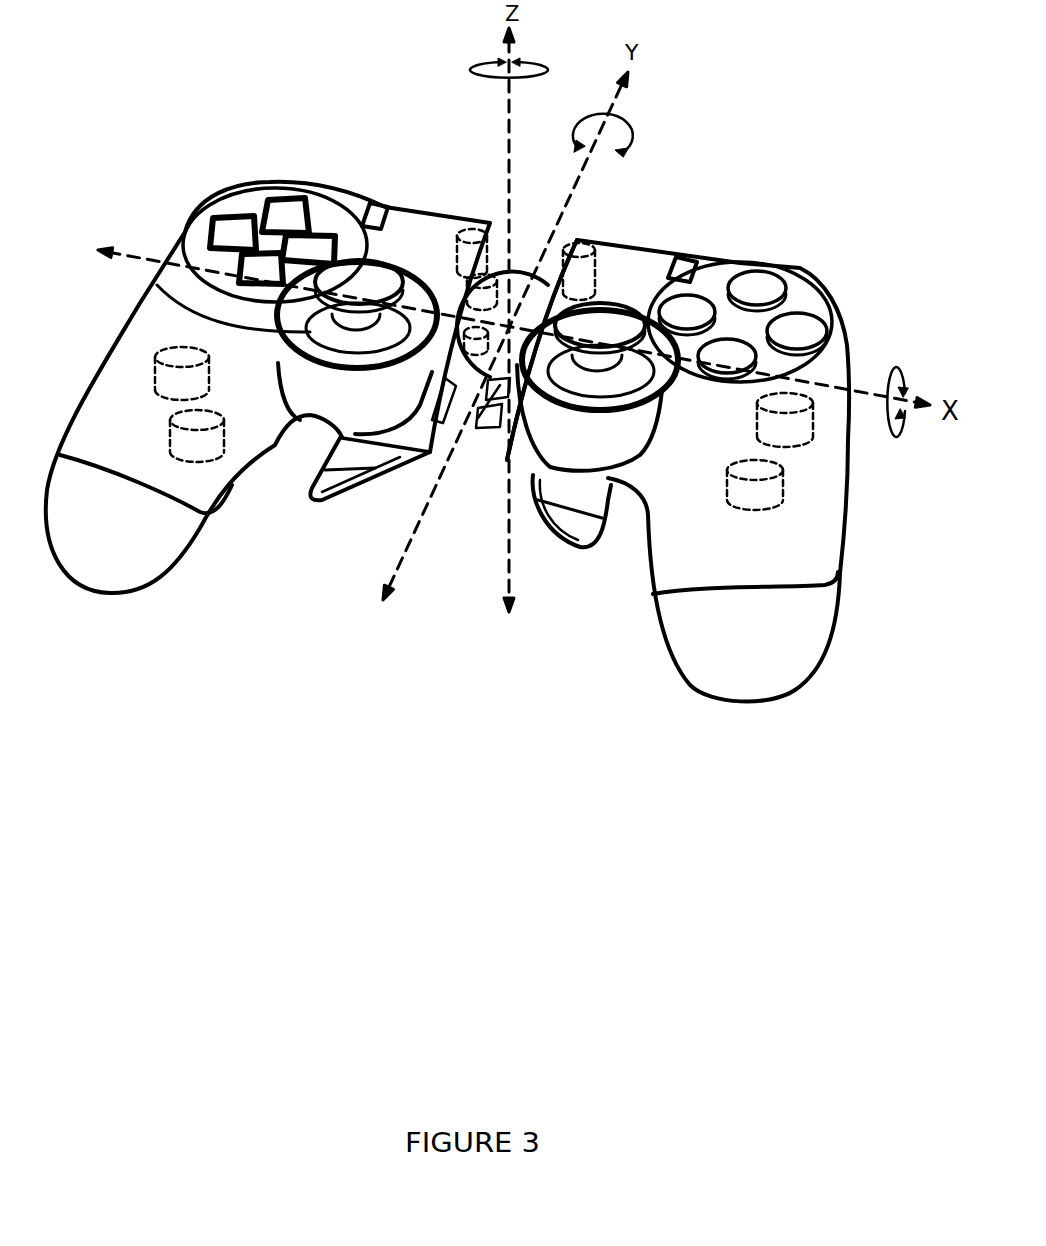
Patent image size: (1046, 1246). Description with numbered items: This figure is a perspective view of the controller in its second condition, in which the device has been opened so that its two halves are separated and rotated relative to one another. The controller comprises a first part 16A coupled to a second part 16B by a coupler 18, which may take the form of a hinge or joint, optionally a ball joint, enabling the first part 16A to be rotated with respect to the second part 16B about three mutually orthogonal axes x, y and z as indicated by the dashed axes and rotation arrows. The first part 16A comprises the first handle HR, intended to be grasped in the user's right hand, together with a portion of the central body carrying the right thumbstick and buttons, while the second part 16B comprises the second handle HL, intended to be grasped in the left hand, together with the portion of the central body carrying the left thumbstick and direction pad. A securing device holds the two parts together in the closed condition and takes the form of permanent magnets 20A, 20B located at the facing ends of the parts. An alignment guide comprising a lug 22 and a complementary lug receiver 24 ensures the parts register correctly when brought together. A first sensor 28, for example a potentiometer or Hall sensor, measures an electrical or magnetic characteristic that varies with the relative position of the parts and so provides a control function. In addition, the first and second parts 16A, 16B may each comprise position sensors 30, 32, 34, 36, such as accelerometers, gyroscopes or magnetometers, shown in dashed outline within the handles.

The first part 16A is at (773, 659).
The second part 16B is at (137, 537).
The coupler 18 is at (535, 295).
The permanent magnet 20A is at (470, 243).
The permanent magnet 20B is at (580, 262).
The lug 22 is at (497, 414).
The lug receiver 24 is at (437, 428).
The first sensor 28 is at (498, 272).
The position sensor 30 is at (778, 402).
The position sensor 32 is at (765, 470).
The position sensor 34 is at (165, 358).
The position sensor 36 is at (178, 420).
The second handle HL is at (187, 543).
The first handle HR is at (820, 607).